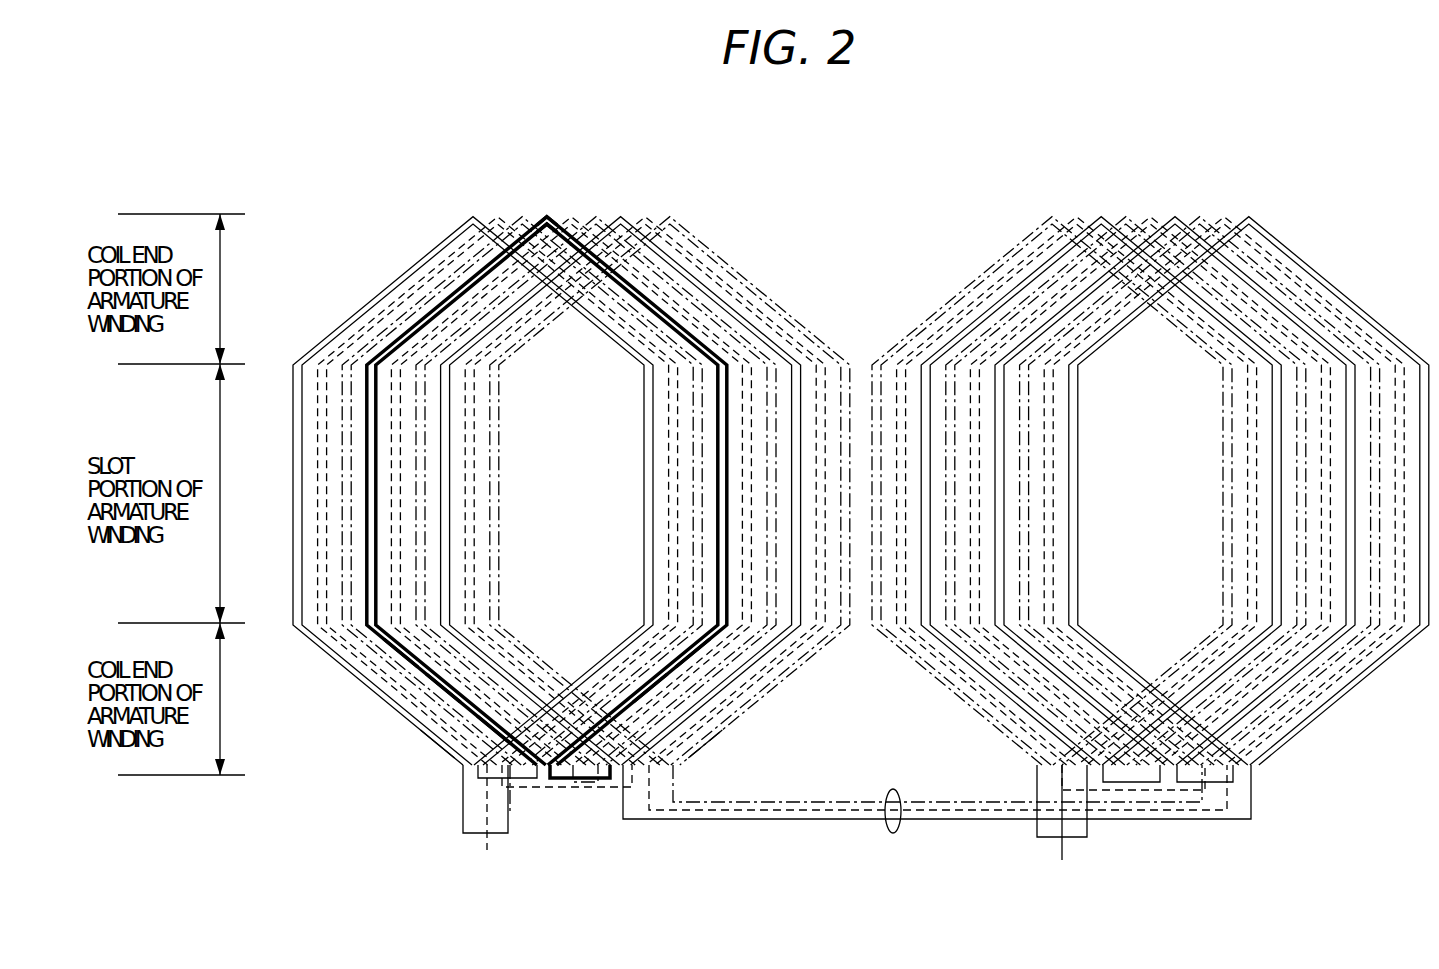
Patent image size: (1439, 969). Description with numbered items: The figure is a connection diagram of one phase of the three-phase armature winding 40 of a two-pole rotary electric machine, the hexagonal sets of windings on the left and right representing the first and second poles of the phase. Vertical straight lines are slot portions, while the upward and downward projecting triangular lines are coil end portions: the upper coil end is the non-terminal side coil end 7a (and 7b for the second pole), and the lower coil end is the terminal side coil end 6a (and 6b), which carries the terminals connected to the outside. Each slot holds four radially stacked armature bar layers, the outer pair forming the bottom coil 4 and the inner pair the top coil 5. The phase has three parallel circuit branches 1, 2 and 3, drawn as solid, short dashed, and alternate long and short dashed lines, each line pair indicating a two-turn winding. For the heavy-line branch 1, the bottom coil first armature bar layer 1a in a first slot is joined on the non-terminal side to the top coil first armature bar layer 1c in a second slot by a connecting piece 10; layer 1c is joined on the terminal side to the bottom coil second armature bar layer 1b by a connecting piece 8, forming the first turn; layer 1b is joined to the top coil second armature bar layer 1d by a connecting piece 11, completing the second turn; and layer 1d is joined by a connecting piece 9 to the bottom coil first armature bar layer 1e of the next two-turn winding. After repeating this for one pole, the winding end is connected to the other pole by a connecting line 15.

The parallel circuit branch 1 is at (368, 445).
The bottom coil first armature bar layer 1a is at (396, 648).
The bottom coil second armature bar layer 1b is at (440, 688).
The top coil first armature bar layer 1c is at (722, 648).
The top coil second armature bar layer 1d is at (685, 680).
The bottom coil first armature bar layer 1e is at (520, 680).
The parallel circuit branch 2 is at (390, 520).
The parallel circuit branch 3 is at (415, 592).
The bottom coil 4 is at (428, 740).
The top coil 5 is at (716, 737).
The terminal side coil end 6a is at (452, 794).
The terminal side coil end 6b is at (1272, 810).
The non-terminal side coil end 7a is at (626, 203).
The non-terminal side coil end 7b is at (1184, 208).
The connecting piece 8 is at (540, 790).
The connecting piece 9 is at (580, 790).
The connecting piece 10 is at (540, 219).
The connecting piece 11 is at (553, 219).
The connecting line 15 is at (898, 835).
The armature winding 40 is at (964, 188).